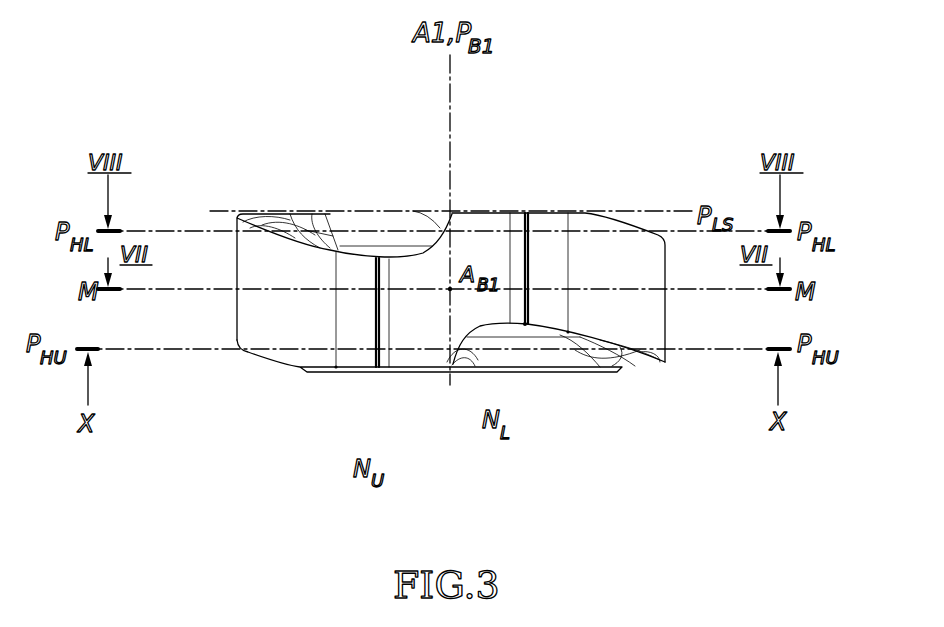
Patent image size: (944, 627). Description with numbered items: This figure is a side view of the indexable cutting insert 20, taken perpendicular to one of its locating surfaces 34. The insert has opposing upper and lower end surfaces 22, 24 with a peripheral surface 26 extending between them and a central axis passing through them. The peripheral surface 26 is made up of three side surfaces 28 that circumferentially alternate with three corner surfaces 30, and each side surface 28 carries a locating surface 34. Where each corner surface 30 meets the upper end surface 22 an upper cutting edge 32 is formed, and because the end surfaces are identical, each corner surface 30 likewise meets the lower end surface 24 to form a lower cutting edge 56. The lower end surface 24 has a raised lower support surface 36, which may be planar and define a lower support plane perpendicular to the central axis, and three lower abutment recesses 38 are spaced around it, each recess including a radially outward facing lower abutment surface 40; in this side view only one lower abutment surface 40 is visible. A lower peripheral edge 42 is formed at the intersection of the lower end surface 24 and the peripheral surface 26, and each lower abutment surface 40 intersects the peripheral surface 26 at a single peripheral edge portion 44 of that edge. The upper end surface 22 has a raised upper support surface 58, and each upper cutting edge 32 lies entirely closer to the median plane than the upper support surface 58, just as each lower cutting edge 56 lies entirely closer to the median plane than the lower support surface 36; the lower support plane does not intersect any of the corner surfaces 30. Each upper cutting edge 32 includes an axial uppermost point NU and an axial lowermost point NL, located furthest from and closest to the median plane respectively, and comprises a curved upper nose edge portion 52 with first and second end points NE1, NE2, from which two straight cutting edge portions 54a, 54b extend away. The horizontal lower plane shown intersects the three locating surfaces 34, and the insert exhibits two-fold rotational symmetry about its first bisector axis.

The indexable cutting insert 20 is at (617, 131).
The upper end surface 22 is at (538, 372).
The lower end surface 24 is at (547, 210).
The peripheral surface 26 is at (617, 270).
The side surface 28 is at (437, 322).
The corner surface 30 is at (272, 322).
The upper cutting edge 32 is at (255, 363).
The locating surface 34 is at (425, 372).
The lower support surface 36 is at (523, 210).
The lower abutment recess 38 is at (337, 238).
The lower abutment surface 40 is at (372, 218).
The lower peripheral edge 42 is at (476, 210).
The peripheral edge portion 44 is at (415, 213).
The upper nose edge portion 52 is at (270, 370).
The straight cutting edge portion 54a is at (575, 370).
The straight cutting edge portion 54b is at (352, 368).
The lower cutting edge 56 is at (627, 210).
The upper support surface 58 is at (513, 372).
The first end point NE1 is at (588, 370).
The second end point NE2 is at (320, 368).
The axial uppermost point NU is at (372, 368).
The axial lowermost point NL is at (525, 327).